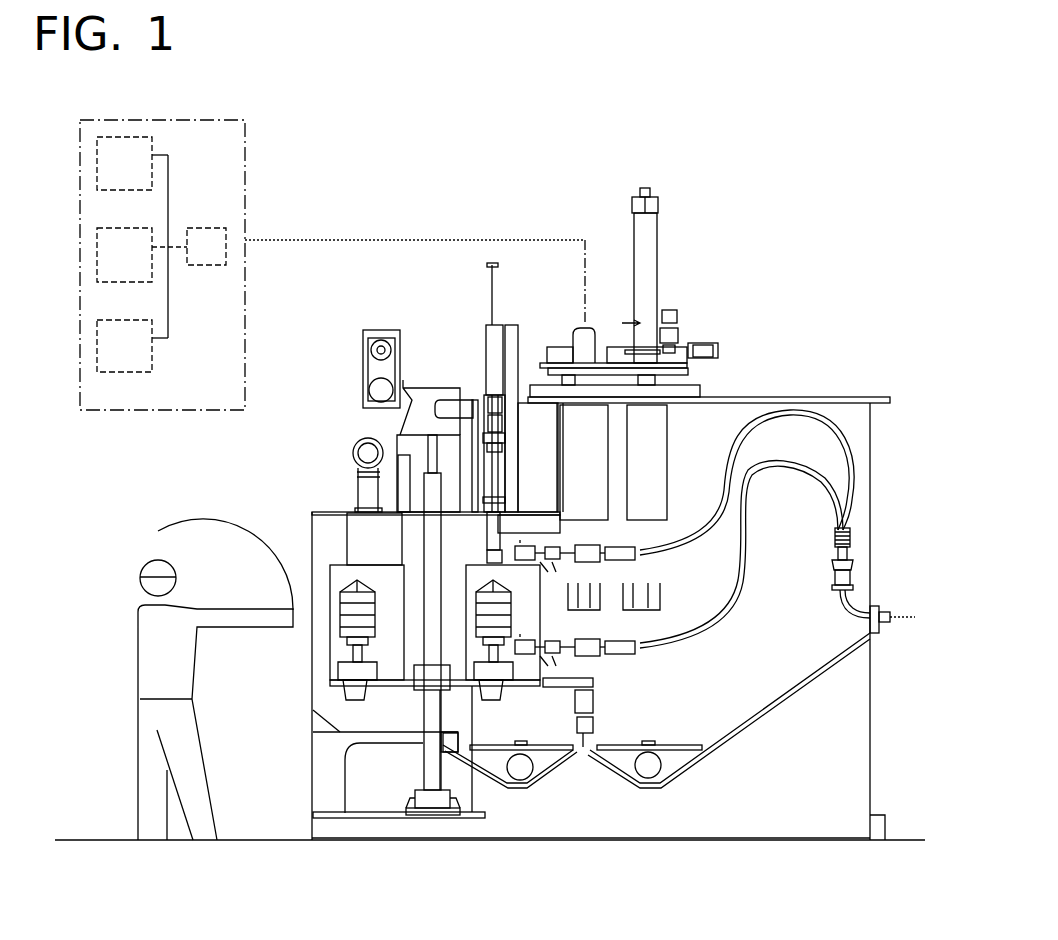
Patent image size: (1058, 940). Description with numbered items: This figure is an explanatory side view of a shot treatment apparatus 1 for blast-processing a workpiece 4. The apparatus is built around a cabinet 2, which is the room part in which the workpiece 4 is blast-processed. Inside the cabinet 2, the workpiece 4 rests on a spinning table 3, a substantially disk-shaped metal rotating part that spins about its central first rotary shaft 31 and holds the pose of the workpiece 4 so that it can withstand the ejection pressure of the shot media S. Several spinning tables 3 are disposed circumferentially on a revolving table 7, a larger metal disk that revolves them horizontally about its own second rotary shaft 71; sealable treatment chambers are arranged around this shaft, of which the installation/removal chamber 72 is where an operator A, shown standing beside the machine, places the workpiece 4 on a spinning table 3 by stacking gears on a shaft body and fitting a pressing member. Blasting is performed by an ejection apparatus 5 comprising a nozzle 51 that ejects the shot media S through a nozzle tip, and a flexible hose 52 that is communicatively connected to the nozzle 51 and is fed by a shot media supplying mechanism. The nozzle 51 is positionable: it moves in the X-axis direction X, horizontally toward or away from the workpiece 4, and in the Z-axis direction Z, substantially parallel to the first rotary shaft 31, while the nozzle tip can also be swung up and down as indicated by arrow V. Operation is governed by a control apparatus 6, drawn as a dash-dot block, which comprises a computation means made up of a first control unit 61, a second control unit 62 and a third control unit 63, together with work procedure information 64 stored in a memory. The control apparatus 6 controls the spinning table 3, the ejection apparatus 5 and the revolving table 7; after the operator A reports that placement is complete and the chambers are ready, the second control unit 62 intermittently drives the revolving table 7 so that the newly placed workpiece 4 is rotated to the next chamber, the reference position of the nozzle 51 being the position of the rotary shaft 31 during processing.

The shot treatment apparatus 1 is at (505, 167).
The cabinet 2 is at (730, 400).
The spinning table 3 is at (348, 662).
The first rotary shaft 31 is at (338, 734).
The workpiece 4 is at (346, 594).
The ejection apparatus 5 is at (616, 570).
The nozzle 51 is at (635, 562).
The hose 52 is at (860, 468).
The control apparatus 6 is at (332, 265).
The first control unit 61 is at (124, 163).
The second control unit 62 is at (124, 255).
The third control unit 63 is at (124, 346).
The work procedure information 64 is at (206, 247).
The revolving table 7 is at (397, 700).
The second rotary shaft 71 is at (433, 780).
The installation/removal chamber 72 is at (374, 539).
The operator A is at (138, 650).
The shot media S is at (557, 687).
The arrow V is at (572, 565).
The X-axis direction X is at (790, 812).
The Z-axis direction Z is at (808, 722).